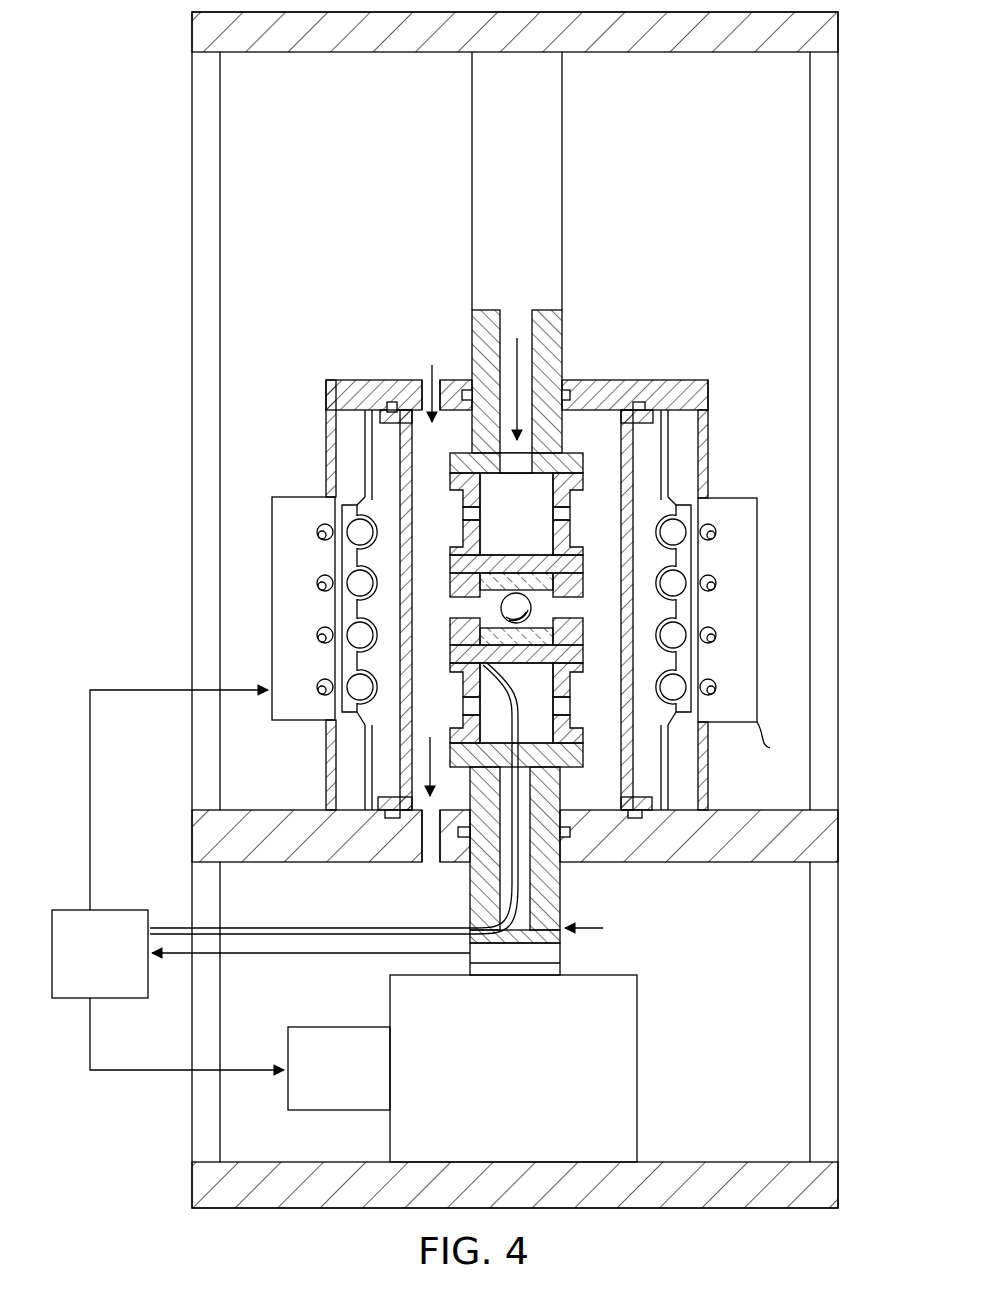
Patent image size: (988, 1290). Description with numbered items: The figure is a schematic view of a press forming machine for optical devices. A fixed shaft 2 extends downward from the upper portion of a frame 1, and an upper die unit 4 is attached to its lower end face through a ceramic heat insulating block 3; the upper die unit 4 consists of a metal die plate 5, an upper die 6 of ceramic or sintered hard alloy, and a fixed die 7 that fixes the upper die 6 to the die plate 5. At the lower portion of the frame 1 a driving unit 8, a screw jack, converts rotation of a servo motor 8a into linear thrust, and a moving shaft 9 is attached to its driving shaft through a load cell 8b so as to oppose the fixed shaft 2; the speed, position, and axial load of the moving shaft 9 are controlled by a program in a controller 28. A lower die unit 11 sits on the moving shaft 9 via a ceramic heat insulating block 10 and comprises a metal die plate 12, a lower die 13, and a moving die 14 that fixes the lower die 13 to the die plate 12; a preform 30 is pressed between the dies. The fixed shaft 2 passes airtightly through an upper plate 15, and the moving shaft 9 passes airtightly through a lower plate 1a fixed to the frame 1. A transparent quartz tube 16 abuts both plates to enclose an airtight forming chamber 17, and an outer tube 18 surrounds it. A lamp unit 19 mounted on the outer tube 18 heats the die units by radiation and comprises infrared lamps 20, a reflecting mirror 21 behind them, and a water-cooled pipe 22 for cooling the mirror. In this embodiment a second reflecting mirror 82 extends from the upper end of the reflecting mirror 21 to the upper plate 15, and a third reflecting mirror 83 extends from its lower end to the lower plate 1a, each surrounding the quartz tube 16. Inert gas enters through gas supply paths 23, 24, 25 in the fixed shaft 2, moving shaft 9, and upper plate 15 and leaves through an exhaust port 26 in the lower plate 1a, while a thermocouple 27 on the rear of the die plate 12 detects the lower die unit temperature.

The frame 1 is at (839, 193).
The lower plate 1a is at (738, 862).
The fixed shaft 2 is at (562, 165).
The heat insulating block 3 is at (573, 493).
The upper die unit 4 is at (583, 572).
The die plate 5 is at (460, 565).
The upper die 6 is at (517, 578).
The fixed die 7 is at (456, 581).
The driving unit 8 is at (638, 1035).
The servo motor 8a is at (331, 1110).
The load cell 8b is at (562, 952).
The moving shaft 9 is at (562, 883).
The heat insulating block 10 is at (572, 721).
The lower die unit 11 is at (613, 687).
The die plate 12 is at (452, 652).
The lower die 13 is at (497, 613).
The moving die 14 is at (452, 634).
The upper plate 15 is at (665, 382).
The transparent quartz tube 16 is at (618, 420).
The forming chamber 17 is at (446, 425).
The outer tube 18 is at (708, 398).
The lamp unit 19 is at (797, 768).
The infrared lamps 20 is at (688, 541).
The reflecting mirror 21 is at (700, 520).
The water-cooled pipe 22 is at (714, 590).
The gas supply path 23 is at (528, 317).
The gas supply path 24 is at (550, 929).
The gas supply path 25 is at (418, 382).
The exhaust port 26 is at (430, 860).
The thermocouple 27 is at (466, 688).
The controller 28 is at (112, 908).
The preform 30 is at (534, 612).
The second reflecting mirror 82 is at (655, 450).
The third reflecting mirror 83 is at (655, 785).